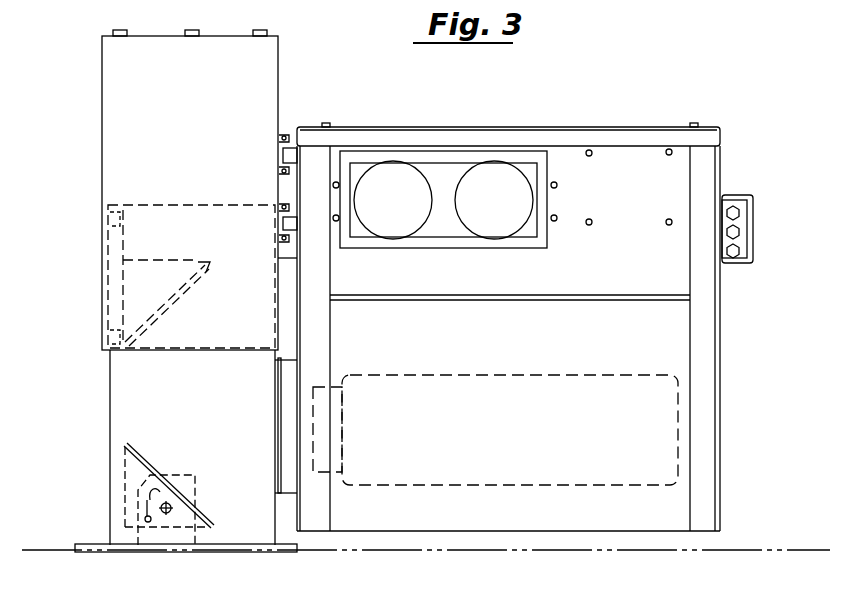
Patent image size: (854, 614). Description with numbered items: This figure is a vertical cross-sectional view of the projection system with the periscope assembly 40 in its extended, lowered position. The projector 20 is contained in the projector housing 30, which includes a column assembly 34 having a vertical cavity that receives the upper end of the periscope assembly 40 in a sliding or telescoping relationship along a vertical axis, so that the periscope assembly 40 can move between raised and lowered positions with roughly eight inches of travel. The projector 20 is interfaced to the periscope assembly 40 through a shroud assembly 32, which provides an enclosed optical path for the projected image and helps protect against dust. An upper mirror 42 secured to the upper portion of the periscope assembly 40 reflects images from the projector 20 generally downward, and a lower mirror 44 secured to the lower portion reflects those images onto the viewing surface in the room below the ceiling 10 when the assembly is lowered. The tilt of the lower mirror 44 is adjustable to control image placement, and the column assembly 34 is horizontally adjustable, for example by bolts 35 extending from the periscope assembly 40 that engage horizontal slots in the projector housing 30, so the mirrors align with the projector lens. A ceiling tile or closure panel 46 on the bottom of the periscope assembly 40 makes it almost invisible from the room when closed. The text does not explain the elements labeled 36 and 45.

The ceiling 10 is at (655, 553).
The projector 20 is at (580, 385).
The projector housing 30 is at (525, 292).
The shroud assembly 32 is at (285, 420).
The column assembly 34 is at (133, 145).
The bolts 35 is at (278, 208).
The speaker panel 36 is at (492, 188).
The periscope assembly 40 is at (175, 314).
The upper mirror 42 is at (168, 303).
The lower mirror 44 is at (148, 470).
The latch mechanism 45 is at (140, 505).
The ceiling tile or closure panel 46 is at (258, 553).